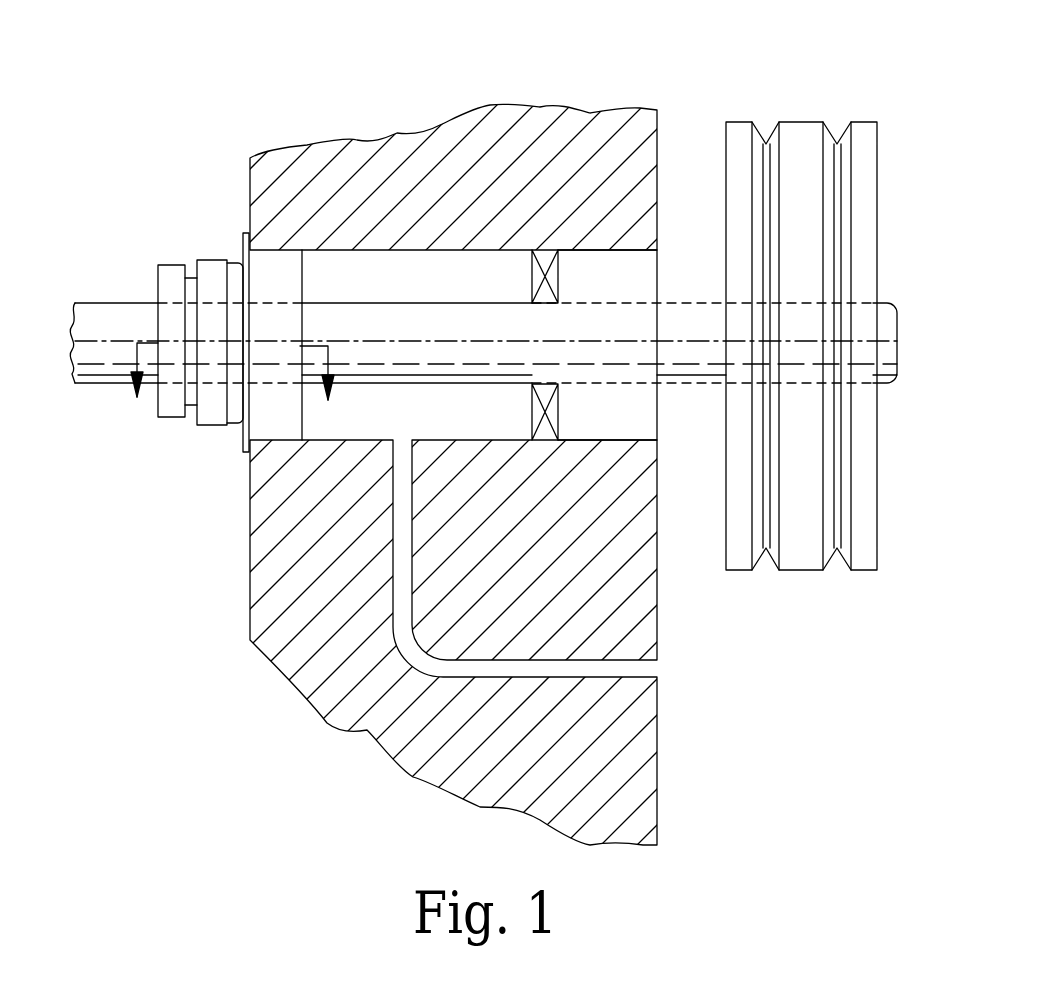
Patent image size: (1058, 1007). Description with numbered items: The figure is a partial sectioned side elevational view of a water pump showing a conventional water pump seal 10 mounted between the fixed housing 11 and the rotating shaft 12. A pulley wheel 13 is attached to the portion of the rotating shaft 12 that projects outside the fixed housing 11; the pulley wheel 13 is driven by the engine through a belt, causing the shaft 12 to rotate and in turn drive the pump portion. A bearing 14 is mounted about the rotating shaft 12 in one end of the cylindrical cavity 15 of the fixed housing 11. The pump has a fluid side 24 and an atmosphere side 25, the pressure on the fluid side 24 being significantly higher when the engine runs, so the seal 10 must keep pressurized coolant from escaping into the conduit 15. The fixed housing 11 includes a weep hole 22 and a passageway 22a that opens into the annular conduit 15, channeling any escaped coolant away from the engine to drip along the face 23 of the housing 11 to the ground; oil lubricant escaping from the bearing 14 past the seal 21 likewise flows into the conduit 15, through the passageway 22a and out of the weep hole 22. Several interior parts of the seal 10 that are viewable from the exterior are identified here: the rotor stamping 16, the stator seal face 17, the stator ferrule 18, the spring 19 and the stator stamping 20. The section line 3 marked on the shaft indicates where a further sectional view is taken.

The section line 3- 3 is at (233, 378).
The water pump seal 10 is at (177, 362).
The fixed housing 11 is at (502, 107).
The rotating shaft 12 is at (100, 383).
The pulley wheel 13 is at (863, 122).
The bearing 14 is at (658, 277).
The cylindrical cavity 15 is at (368, 423).
The rotor stamping 16 is at (167, 418).
The stator seal face 17 is at (183, 423).
The stator ferrule 18 is at (208, 427).
The spring 19 is at (235, 430).
The stator stamping 20 is at (260, 283).
The seal 21 is at (532, 275).
The weep hole 22 is at (643, 673).
The passageway 22a is at (393, 553).
The face 23 is at (657, 770).
The fluid side 24 is at (128, 250).
The atmosphere side 25 is at (742, 640).